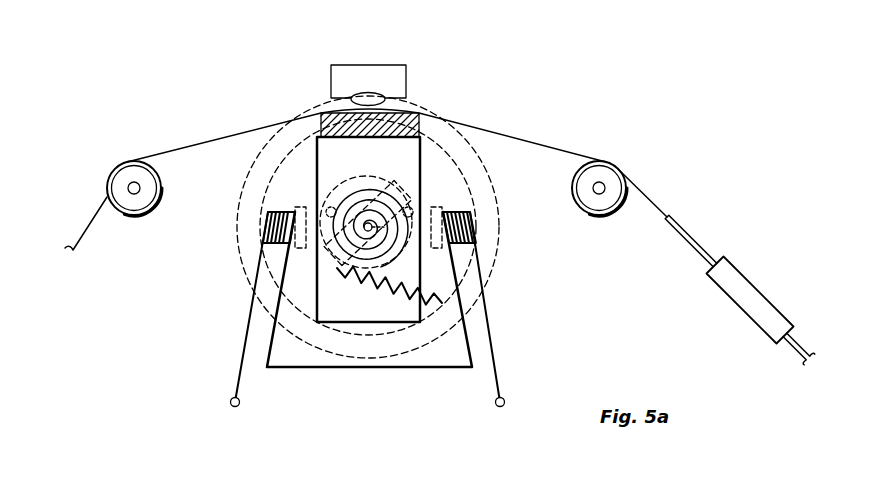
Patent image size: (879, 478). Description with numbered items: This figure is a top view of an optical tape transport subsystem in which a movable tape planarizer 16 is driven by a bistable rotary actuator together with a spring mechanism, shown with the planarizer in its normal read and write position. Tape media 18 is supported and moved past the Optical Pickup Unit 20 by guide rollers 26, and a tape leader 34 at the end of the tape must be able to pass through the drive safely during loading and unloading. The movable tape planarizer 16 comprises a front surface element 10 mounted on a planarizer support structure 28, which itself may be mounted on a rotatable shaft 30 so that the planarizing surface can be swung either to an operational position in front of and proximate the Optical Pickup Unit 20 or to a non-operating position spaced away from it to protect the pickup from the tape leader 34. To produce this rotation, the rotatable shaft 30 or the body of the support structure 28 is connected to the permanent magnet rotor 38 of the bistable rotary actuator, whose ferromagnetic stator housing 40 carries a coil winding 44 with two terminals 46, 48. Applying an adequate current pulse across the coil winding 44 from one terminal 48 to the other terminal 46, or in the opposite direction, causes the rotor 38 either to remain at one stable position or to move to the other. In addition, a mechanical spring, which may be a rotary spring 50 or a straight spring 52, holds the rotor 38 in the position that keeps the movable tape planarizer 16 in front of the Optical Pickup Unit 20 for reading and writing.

The front surface element 10 is at (390, 123).
The movable tape planarizer 16 is at (237, 296).
The tape media 18 is at (90, 212).
The Optical Pickup Unit 20 is at (331, 80).
The guide rollers 26 is at (140, 216).
The planarizer support structure 28 is at (317, 145).
The rotatable shaft 30 is at (390, 252).
The tape leader 34 is at (758, 293).
The permanent magnet rotor 38 is at (376, 168).
The ferromagnetic stator housing 40 is at (499, 232).
The coil winding 44 is at (268, 214).
The terminal 46 is at (238, 407).
The terminal 48 is at (497, 407).
The rotary spring 50 is at (346, 184).
The straight spring 52 is at (353, 300).